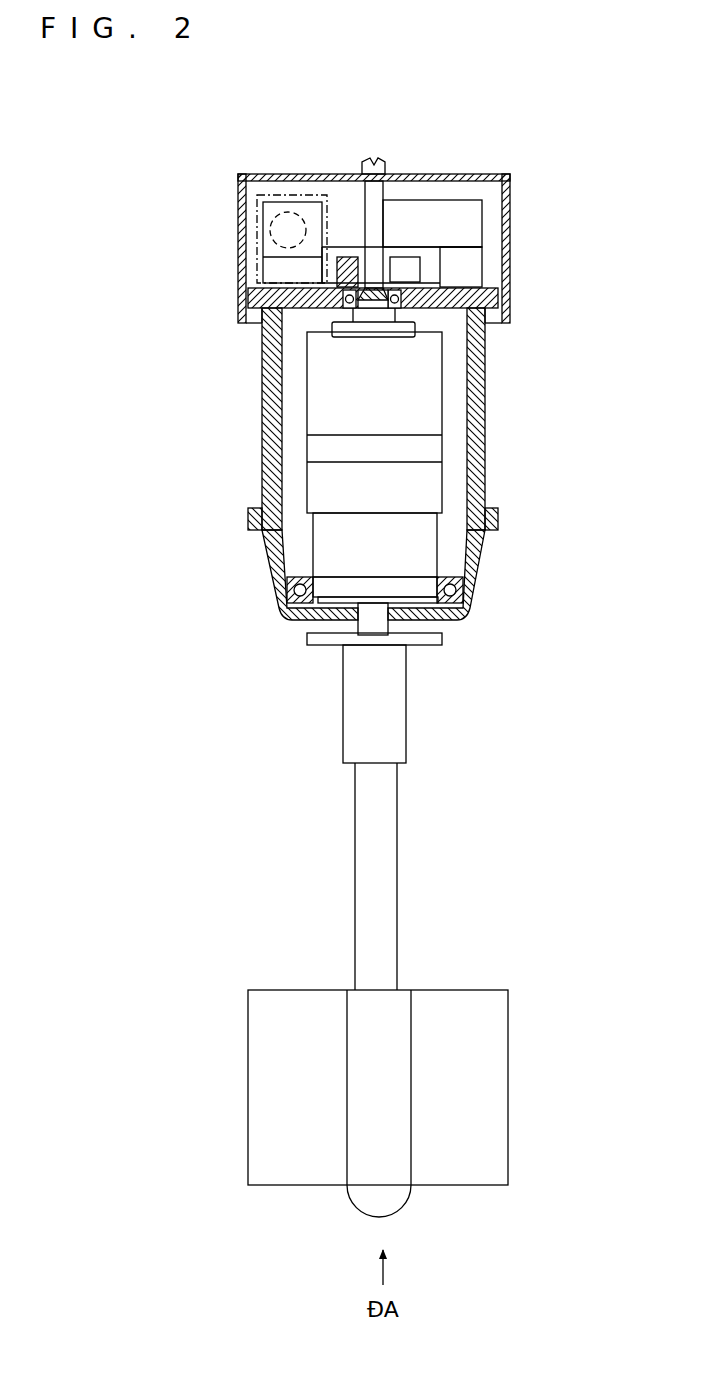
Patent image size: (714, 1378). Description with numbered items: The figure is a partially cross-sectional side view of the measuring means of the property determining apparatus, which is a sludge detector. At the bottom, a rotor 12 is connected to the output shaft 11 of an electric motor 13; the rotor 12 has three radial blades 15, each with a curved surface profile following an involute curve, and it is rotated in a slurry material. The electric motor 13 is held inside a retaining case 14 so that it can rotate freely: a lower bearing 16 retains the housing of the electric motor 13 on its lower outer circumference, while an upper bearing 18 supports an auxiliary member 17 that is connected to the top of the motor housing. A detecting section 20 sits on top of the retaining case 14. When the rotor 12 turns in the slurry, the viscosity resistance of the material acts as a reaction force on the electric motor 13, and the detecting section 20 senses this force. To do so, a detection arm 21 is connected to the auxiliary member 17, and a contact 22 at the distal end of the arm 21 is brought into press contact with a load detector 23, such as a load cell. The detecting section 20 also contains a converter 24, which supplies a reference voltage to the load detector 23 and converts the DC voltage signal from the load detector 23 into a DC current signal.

The output shaft 11 is at (385, 815).
The rotor 12 is at (407, 1090).
The electric motor 13 is at (443, 477).
The retaining case 14 is at (485, 413).
The radial blades 15 is at (255, 1062).
The lower bearing 16 is at (293, 623).
The auxiliary member 17 is at (395, 317).
The upper bearing 18 is at (512, 318).
The detecting section 20 is at (520, 209).
The detection arm 21 is at (420, 267).
The contact 22 is at (270, 224).
The load detector 23 is at (279, 200).
The converter 24 is at (430, 215).